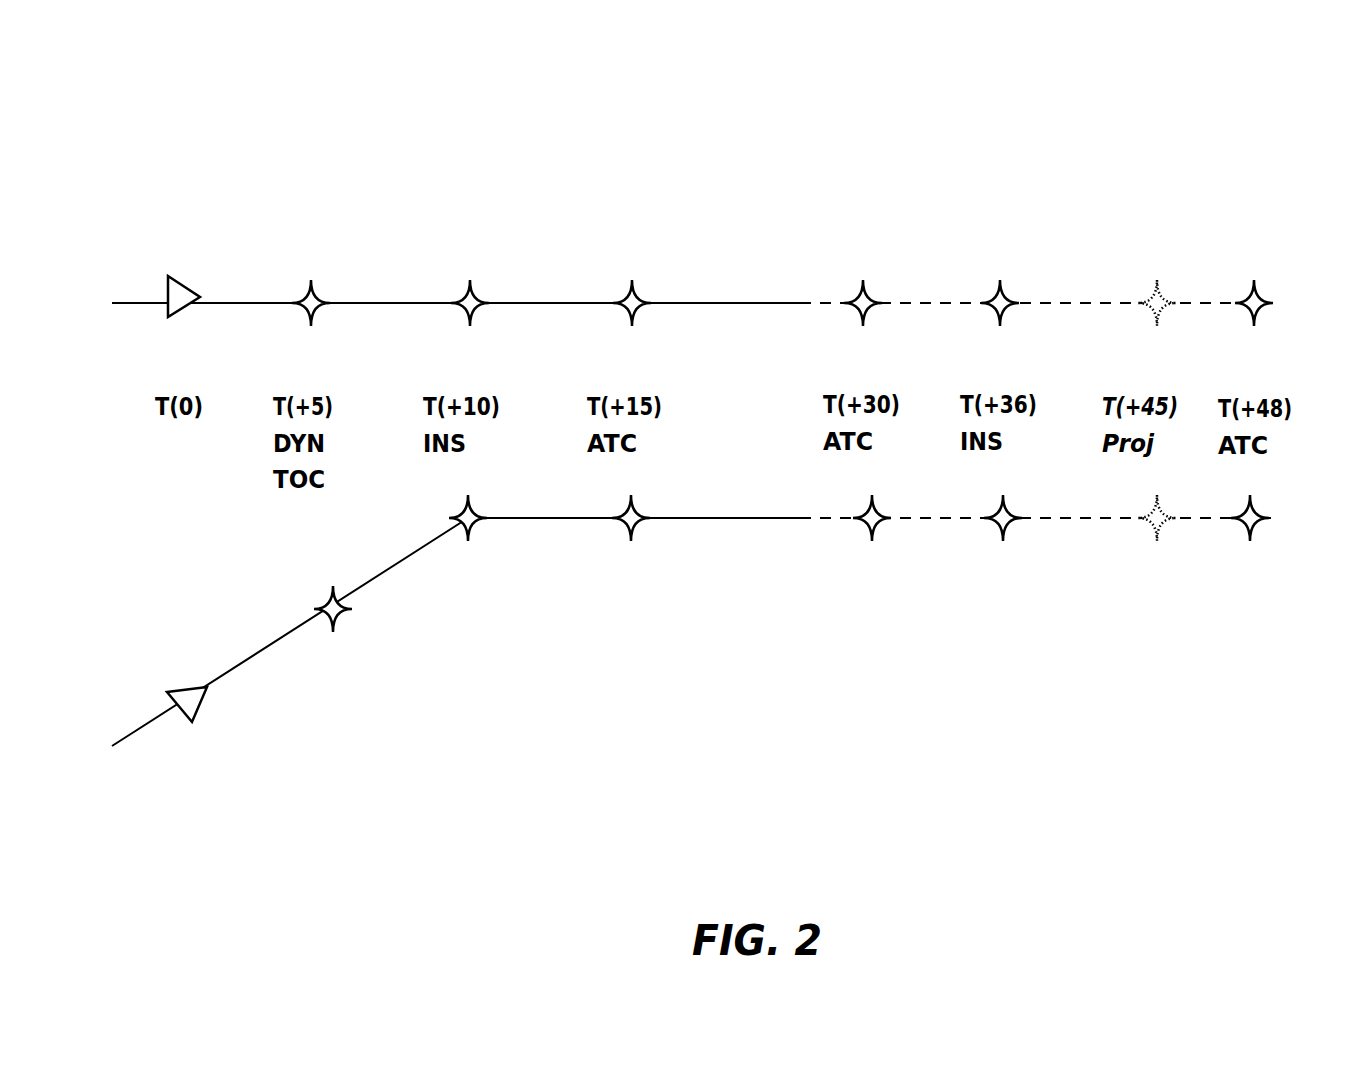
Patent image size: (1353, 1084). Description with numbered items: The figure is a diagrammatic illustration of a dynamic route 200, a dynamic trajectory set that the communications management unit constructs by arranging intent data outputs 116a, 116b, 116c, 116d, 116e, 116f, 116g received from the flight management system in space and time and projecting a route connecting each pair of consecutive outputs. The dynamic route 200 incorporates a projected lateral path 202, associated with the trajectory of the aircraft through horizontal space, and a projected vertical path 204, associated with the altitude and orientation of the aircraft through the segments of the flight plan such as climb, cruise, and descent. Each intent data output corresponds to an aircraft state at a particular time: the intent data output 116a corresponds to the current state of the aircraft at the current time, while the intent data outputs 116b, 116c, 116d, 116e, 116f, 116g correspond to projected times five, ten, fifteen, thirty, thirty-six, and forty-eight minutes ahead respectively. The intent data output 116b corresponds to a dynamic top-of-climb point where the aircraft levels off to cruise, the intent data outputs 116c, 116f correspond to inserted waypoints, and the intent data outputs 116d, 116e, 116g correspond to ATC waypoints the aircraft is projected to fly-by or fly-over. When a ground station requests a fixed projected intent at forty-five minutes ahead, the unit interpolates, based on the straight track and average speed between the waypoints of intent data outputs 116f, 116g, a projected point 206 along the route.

The dynamic route 200 is at (143, 113).
The projected lateral path 202 is at (752, 303).
The projected vertical path 204 is at (730, 518).
The fixed projected intent 206 is at (1158, 280).
The intent data output 116a is at (185, 285).
The intent data output 116b is at (312, 282).
The intent data output 116c is at (472, 282).
The intent data output 116d is at (633, 280).
The intent data output 116e is at (863, 280).
The intent data output 116f is at (1000, 278).
The intent data output 116g is at (1253, 280).